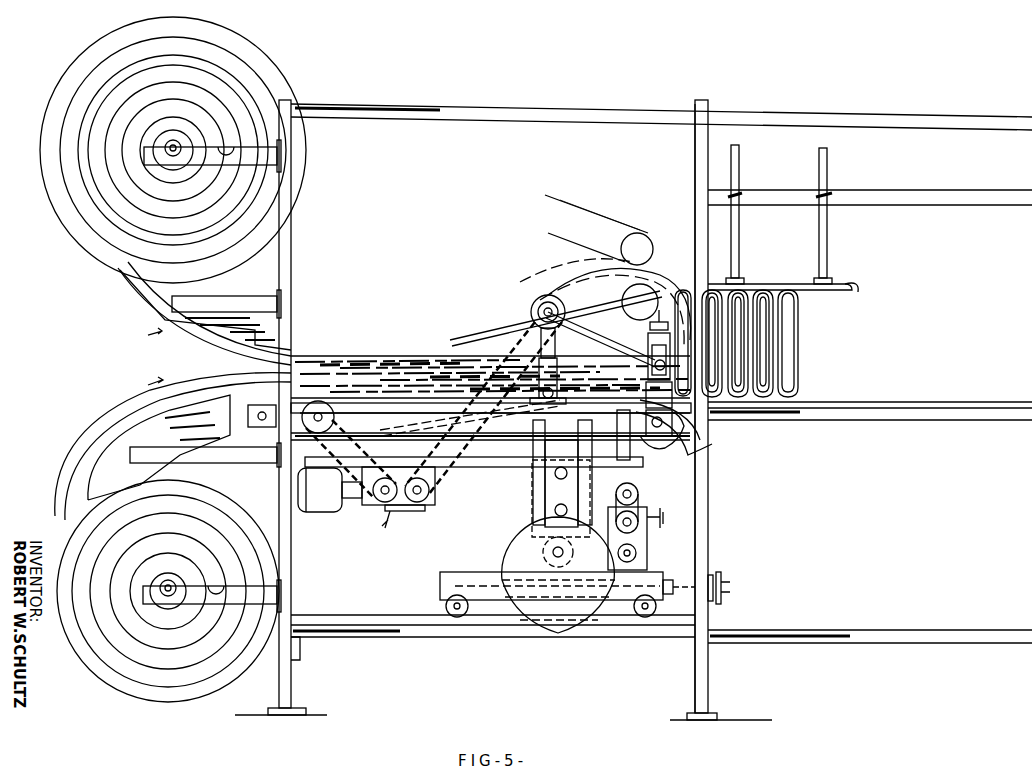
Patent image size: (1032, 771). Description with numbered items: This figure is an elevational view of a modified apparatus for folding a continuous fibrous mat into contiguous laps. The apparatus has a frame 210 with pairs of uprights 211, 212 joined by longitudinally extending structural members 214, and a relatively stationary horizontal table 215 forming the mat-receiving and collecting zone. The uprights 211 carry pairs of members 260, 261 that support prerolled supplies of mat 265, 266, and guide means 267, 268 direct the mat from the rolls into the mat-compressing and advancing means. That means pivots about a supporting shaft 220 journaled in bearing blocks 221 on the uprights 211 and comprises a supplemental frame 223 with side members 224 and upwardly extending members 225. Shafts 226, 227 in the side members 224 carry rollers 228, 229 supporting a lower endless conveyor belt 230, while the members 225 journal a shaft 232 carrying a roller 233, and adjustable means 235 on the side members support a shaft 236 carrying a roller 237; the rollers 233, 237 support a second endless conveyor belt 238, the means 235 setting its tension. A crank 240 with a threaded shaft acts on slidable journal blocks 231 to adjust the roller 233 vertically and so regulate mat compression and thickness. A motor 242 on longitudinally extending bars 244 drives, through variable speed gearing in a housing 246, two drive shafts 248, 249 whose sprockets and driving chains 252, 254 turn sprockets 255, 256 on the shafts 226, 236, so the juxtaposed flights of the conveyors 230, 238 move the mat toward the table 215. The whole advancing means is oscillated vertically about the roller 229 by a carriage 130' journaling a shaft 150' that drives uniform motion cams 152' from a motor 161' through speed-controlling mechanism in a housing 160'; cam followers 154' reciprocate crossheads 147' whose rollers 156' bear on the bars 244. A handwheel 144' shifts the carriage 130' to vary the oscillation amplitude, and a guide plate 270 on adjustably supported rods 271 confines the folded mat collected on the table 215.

The carriage 130' is at (493, 616).
The handwheel 144' is at (737, 588).
The crossheads 147' is at (589, 483).
The shaft 150' is at (512, 559).
The uniform motion cams 152' is at (541, 575).
The cam followers 154' is at (526, 516).
The rollers 156' is at (541, 498).
The housing 160' is at (646, 538).
The motor 161' is at (648, 505).
The frame 210 is at (717, 676).
The uprights 211 is at (290, 580).
The uprights 212 is at (708, 524).
The longitudinally extending structural members 214 is at (968, 112).
The table 215 is at (890, 402).
The supporting shaft 220 is at (252, 422).
The bearing blocks 221 is at (258, 440).
The supplemental frame 223 is at (375, 398).
The side members 224 is at (491, 421).
The upwardly extending members 225 is at (690, 415).
The shaft 226 is at (495, 420).
The shaft 227 is at (657, 436).
The roller 228 is at (342, 459).
The roller 229 is at (700, 440).
The endless conveyor belt 230 is at (680, 440).
The slidable journal blocks 231 is at (646, 390).
The shaft 232 is at (652, 366).
The roller 233 is at (648, 350).
The adjustable means 235 is at (520, 372).
The shaft 236 is at (542, 298).
The roller 237 is at (548, 295).
The second endless conveyor belt 238 is at (555, 280).
The crank 240 is at (640, 302).
The motor 242 is at (322, 512).
The longitudinally extending bars 244 is at (505, 467).
The housing 246 is at (380, 512).
The drive shaft 248 is at (388, 502).
The drive shaft 249 is at (420, 502).
The driving chain 252 is at (360, 470).
The driving chain 254 is at (512, 345).
The sprocket 255 is at (318, 401).
The sprocket 256 is at (532, 310).
The members 260 is at (253, 143).
The members 261 is at (215, 600).
The supply of mat 265 is at (270, 70).
The supply of mat 266 is at (178, 700).
The guide means 267 is at (160, 290).
The guide means 268 is at (140, 430).
The plate 270 is at (806, 292).
The rods 271 is at (739, 165).